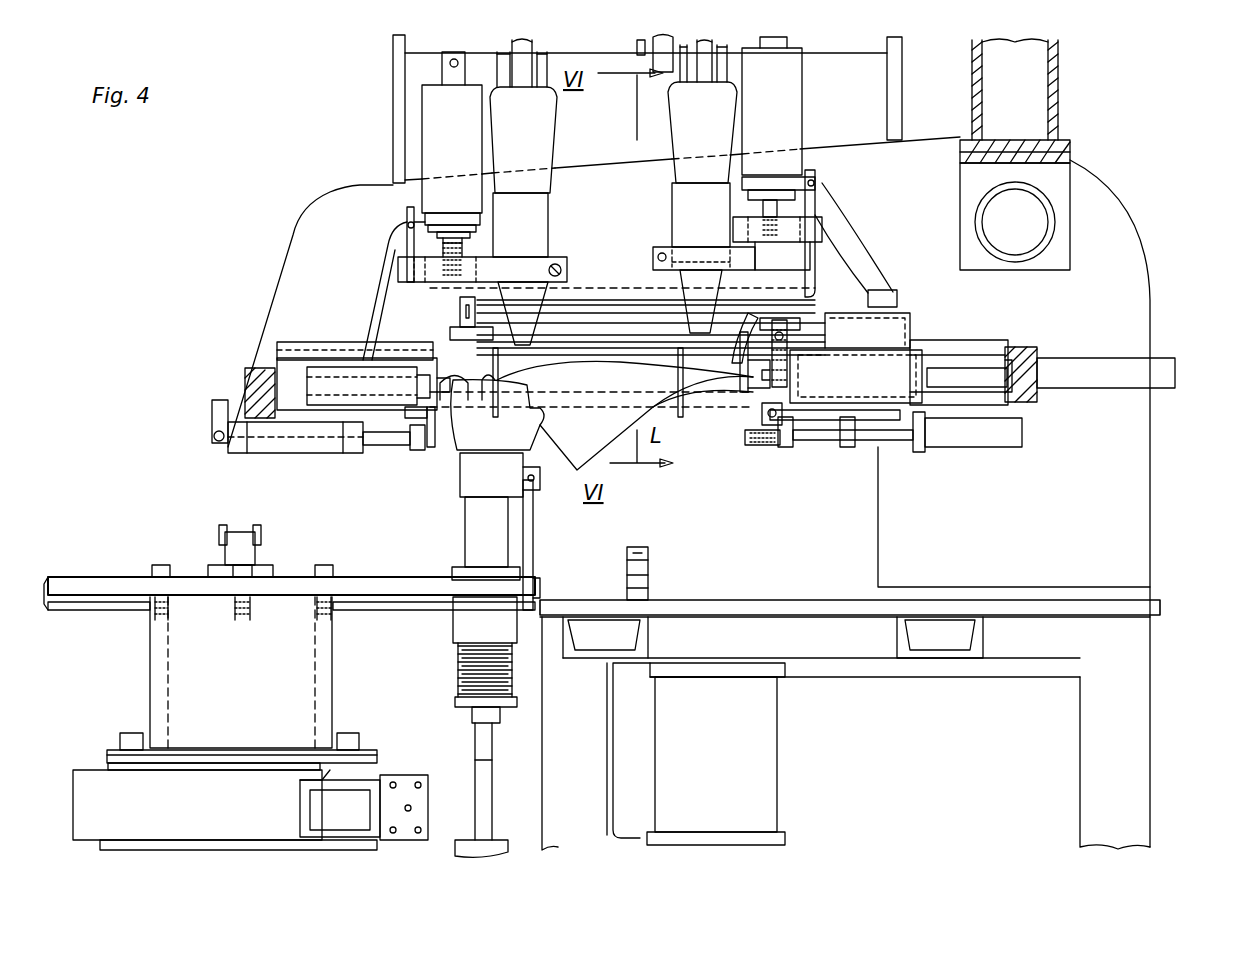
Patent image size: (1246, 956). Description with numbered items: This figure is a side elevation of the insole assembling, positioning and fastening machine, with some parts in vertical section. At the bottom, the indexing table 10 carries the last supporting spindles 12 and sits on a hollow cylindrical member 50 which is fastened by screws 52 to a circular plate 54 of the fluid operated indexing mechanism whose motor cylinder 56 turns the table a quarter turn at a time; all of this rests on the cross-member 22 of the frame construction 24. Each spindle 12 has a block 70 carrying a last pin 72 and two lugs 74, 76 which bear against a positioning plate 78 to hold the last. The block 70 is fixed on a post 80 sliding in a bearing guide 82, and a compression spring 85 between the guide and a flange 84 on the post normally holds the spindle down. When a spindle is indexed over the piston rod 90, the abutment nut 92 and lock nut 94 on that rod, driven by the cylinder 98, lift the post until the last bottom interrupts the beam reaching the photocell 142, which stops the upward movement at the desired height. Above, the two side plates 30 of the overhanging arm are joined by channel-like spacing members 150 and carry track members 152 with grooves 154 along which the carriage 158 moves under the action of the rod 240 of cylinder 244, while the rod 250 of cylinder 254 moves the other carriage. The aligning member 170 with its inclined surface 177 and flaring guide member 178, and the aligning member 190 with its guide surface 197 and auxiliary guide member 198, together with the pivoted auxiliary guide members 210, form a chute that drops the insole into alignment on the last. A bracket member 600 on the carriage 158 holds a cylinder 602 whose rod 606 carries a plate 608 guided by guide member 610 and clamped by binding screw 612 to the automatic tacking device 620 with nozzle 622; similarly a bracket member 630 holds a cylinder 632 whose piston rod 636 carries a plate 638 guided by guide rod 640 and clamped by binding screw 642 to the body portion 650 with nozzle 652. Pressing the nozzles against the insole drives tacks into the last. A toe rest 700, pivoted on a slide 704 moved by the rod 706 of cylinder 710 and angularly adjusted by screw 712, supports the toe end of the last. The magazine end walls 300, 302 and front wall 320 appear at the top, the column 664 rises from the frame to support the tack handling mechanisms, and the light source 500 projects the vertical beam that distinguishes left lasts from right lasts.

The table 10 is at (75, 577).
The last supporting spindle 12 is at (455, 480).
The cross-member 22 is at (100, 847).
The fabricated frame construction 24 is at (1152, 795).
The side plate 30 is at (296, 228).
The hollow cylindrical member 50 is at (241, 671).
The screw 52 is at (125, 733).
The circular plate 54 is at (378, 758).
The motor cylinder 56 is at (364, 805).
The block 70 is at (458, 492).
The last pin 72 is at (497, 410).
The lug 74 is at (222, 528).
The lug 76 is at (262, 527).
The positioning plate 78 is at (500, 475).
The post 80 is at (465, 541).
The bearing guide 82 is at (453, 630).
The flange 84 is at (458, 705).
The compression spring 85 is at (458, 672).
The piston rod 90 is at (492, 777).
The abutment nut 92 is at (502, 711).
The lock nut 94 is at (493, 722).
The cylinder 98 is at (492, 840).
The photocell 142 is at (646, 423).
The channel-like spacing member 150 is at (272, 386).
The track member 152 is at (290, 348).
The groove 154 is at (985, 352).
The carriage 158 is at (363, 384).
The insole receiving and aligning member 170 is at (440, 448).
The inclined guiding surface 177 is at (467, 404).
The guide member 178 is at (458, 312).
The insole receiving and aligning member 190 is at (588, 382).
The inclined guide surface 197 is at (744, 332).
The auxiliary guide member 198 is at (768, 320).
The auxiliary guide member 210 is at (591, 382).
The rod 240 is at (385, 447).
The cylinder 244 is at (275, 455).
The rod 250 is at (1012, 377).
The cylinder 254 is at (1105, 390).
The end wall 300 is at (902, 90).
The end wall 302 is at (393, 70).
The front wall 320 is at (818, 56).
The light source 500 is at (650, 554).
The bracket member 600 is at (363, 300).
The cylinder 602 is at (452, 154).
The rod 606 is at (407, 224).
The plate 608 is at (398, 270).
The guide member 610 is at (443, 248).
The binding screw 612 is at (560, 266).
The automatic tacking device 620 is at (562, 212).
The nozzle 622 is at (552, 288).
The bracket member 630 is at (893, 292).
The cylinder 632 is at (802, 113).
The piston rod 636 is at (790, 210).
The plate 638 is at (822, 228).
The guide rod 640 is at (818, 262).
The binding screw 642 is at (658, 258).
The body portion 650 is at (672, 214).
The nozzle 652 is at (680, 288).
The column 664 is at (1058, 88).
The toe rest 700 is at (742, 418).
The slide 704 is at (846, 425).
The rod 706 is at (900, 440).
The cylinder 710 is at (975, 447).
The adjusting screw 712 is at (758, 448).